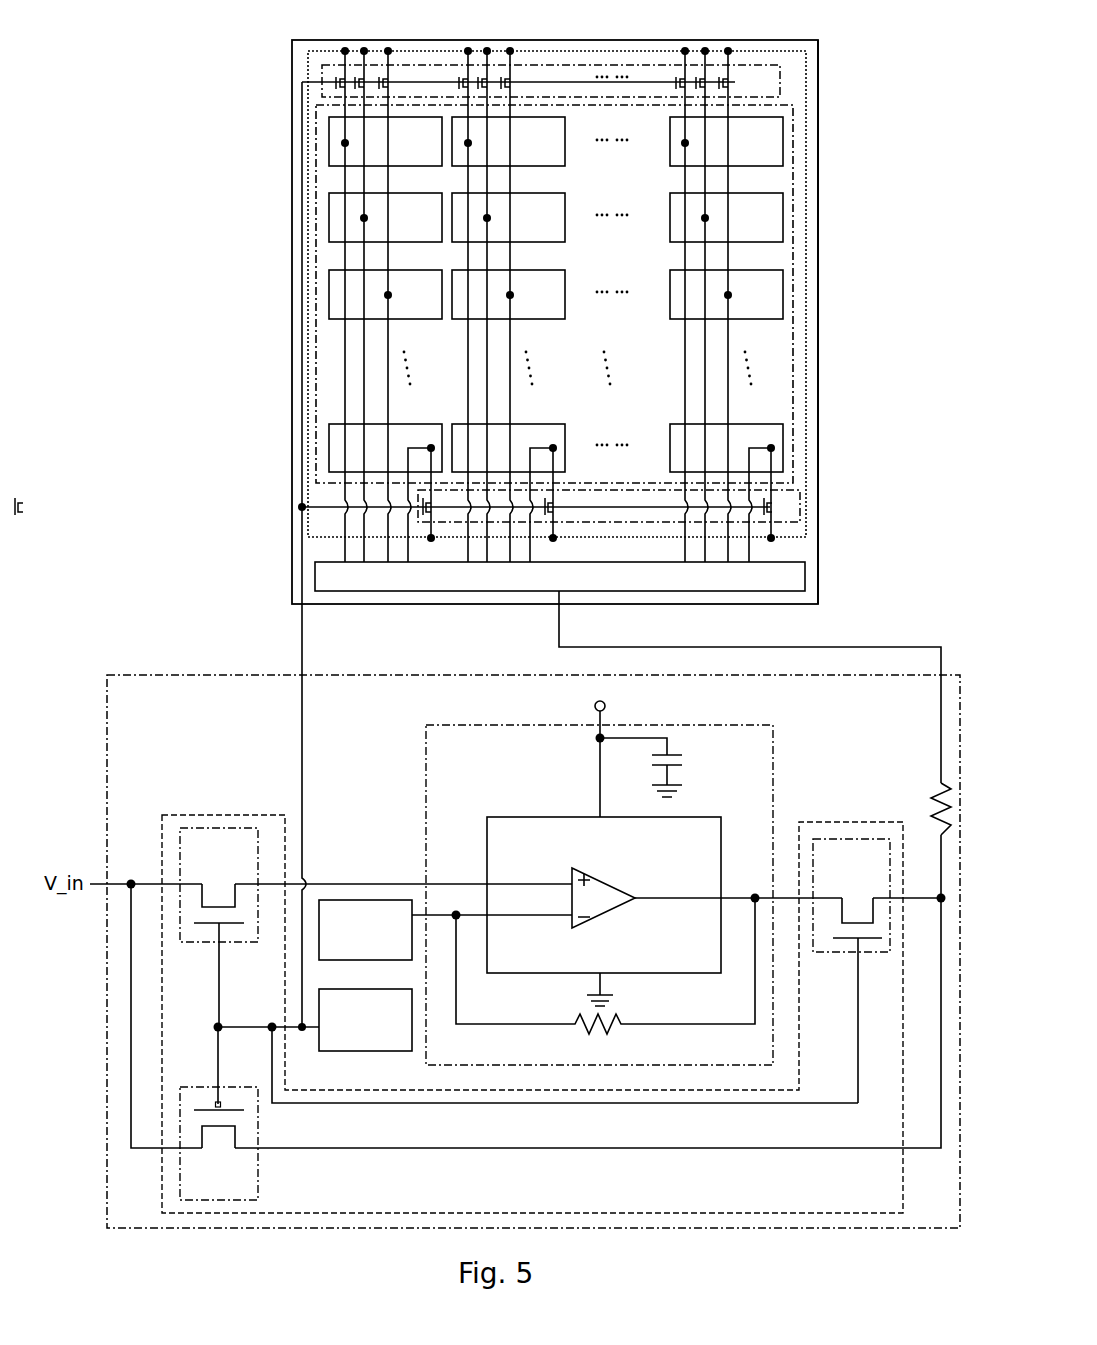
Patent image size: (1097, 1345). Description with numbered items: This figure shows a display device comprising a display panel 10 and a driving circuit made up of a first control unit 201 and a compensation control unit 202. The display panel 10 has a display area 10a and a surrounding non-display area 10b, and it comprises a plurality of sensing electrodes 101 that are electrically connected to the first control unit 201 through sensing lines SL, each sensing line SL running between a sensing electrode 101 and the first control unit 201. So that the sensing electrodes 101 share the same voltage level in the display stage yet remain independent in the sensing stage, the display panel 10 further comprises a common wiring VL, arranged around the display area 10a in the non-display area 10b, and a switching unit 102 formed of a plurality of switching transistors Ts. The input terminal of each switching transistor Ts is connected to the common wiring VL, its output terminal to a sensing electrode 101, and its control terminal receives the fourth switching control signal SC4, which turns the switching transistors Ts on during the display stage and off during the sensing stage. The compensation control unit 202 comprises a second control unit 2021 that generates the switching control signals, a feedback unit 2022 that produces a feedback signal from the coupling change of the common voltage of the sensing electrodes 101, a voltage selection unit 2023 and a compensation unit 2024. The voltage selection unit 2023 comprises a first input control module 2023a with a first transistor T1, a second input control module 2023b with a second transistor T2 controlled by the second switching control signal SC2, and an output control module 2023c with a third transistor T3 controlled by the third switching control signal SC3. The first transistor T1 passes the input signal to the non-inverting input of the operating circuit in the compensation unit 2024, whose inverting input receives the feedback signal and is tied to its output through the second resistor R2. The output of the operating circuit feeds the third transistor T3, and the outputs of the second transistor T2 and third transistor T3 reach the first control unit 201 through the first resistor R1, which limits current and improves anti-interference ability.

The display panel 10 is at (290, 40).
The display area 10a is at (784, 258).
The non-display area 10b is at (818, 218).
The sensing electrode 101 is at (770, 140).
The switching unit 102 is at (772, 64).
The common wiring VL is at (808, 71).
The sensing line SL is at (732, 342).
The switching transistor Ts is at (398, 296).
The fourth switching control signal SC4 is at (534, 556).
The first control unit 201 is at (560, 576).
The compensation control unit 202 is at (154, 710).
The second control unit 2021 is at (365, 1020).
The feedback unit 2022 is at (365, 930).
The voltage selection unit 2023 is at (894, 1208).
The first input control module 2023a is at (248, 854).
The second input control module 2023b is at (250, 1200).
The output control module 2023c is at (880, 866).
The compensation unit 2024 is at (486, 760).
The first transistor T1 is at (219, 945).
The second transistor T2 is at (219, 1099).
The third transistor T3 is at (857, 989).
The first resistor R1 is at (924, 809).
The second resistor R2 is at (605, 976).
The second switching control signal SC2 is at (247, 1046).
The third switching control signal SC3 is at (565, 1078).